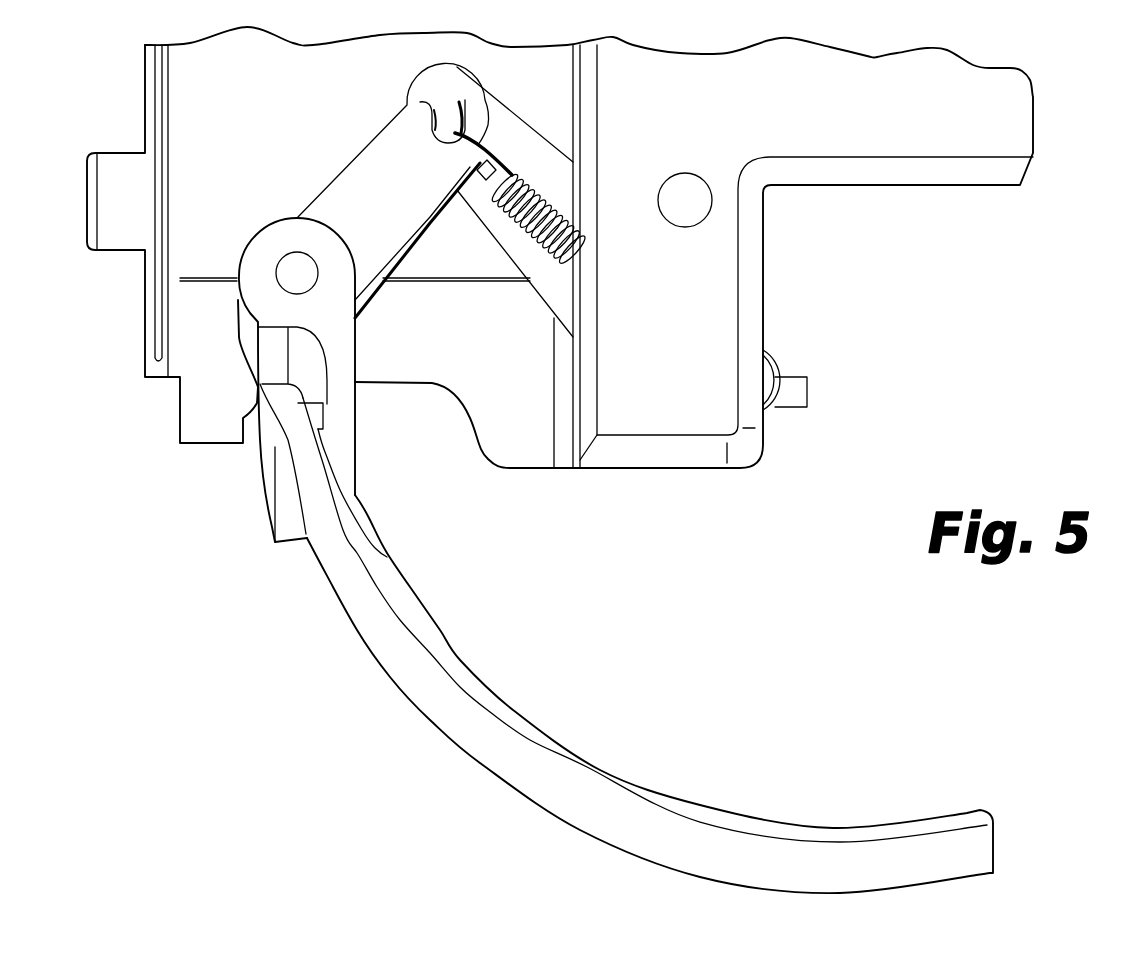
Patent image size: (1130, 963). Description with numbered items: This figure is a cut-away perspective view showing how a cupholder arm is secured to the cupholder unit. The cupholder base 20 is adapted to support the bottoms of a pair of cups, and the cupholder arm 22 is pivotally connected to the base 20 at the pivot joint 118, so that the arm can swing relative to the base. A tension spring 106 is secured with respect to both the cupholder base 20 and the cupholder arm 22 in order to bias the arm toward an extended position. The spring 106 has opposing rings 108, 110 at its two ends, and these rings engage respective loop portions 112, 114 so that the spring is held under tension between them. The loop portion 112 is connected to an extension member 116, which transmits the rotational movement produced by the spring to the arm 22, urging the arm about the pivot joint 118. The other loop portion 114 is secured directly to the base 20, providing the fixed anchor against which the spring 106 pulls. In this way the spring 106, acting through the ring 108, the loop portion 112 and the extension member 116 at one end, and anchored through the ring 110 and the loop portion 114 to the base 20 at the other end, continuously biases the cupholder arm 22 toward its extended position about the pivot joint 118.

The cupholder base 20 is at (560, 247).
The cupholder arm 22 is at (537, 738).
The tension spring 106 is at (572, 200).
The ring 108 is at (483, 178).
The ring 110 is at (767, 410).
The loop portion 112 is at (420, 102).
The loop portion 114 is at (800, 388).
The extension member 116 is at (347, 190).
The pivot joint 118 is at (288, 268).